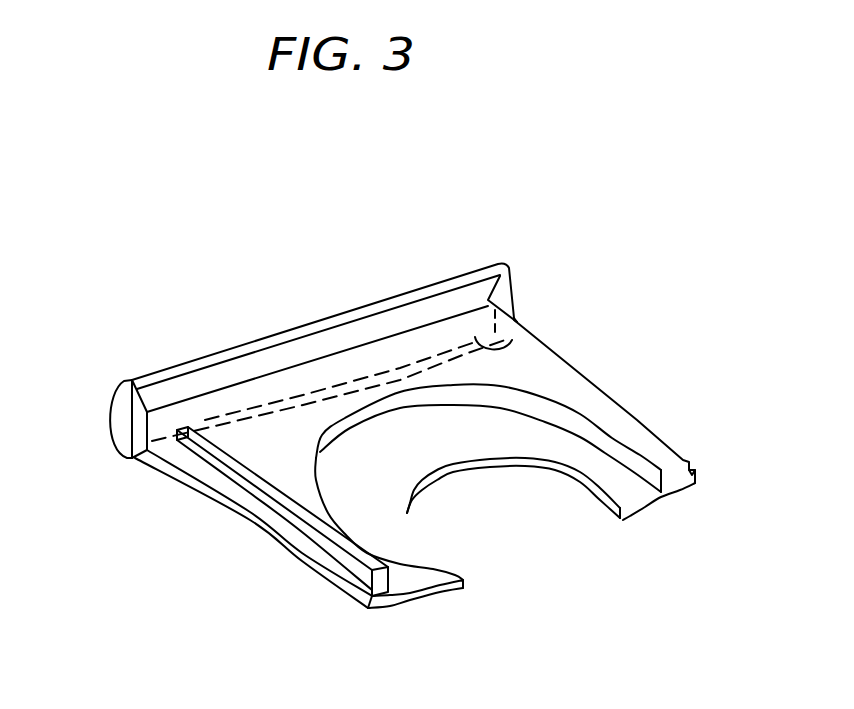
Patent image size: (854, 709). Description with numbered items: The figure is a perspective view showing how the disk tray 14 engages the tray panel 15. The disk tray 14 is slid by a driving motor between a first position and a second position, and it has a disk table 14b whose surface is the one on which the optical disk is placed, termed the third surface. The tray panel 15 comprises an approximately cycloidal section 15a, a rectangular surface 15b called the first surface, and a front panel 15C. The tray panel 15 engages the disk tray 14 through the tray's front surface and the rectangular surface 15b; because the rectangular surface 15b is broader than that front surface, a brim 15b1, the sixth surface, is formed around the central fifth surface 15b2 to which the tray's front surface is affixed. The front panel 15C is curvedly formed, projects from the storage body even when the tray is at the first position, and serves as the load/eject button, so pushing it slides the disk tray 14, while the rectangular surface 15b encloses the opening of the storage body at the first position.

The disk tray 14 is at (415, 491).
The disk table 14b is at (434, 578).
The tray panel 15 is at (340, 374).
The cycloidal section 15a is at (117, 418).
The rectangular surface 15b is at (440, 337).
The brim 15b1 is at (575, 288).
The fifth surface 15b2 is at (488, 317).
The front panel 15C is at (142, 406).